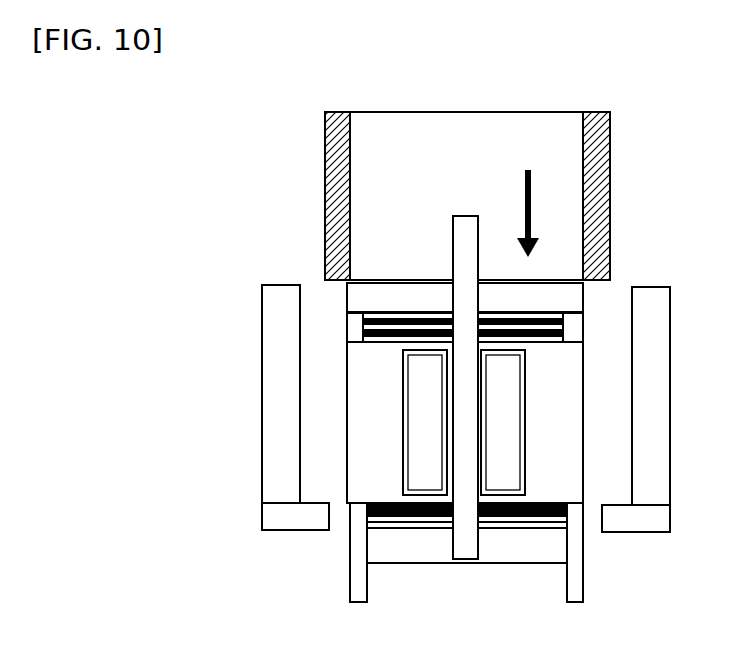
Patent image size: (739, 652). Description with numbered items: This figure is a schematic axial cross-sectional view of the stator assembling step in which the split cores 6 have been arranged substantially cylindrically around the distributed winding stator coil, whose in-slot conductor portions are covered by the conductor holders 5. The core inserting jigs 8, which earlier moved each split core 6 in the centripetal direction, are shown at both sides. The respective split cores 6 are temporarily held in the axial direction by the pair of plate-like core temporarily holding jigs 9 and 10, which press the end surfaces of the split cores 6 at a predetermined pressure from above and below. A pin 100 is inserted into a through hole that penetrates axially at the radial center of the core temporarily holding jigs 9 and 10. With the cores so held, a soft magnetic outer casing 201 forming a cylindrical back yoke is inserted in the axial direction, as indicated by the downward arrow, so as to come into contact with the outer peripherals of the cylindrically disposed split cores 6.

The soft magnetic outer casing 201 is at (335, 234).
The core temporarily holding jig 9 is at (552, 290).
The split core 6 is at (370, 418).
The conductor holder 5 is at (422, 388).
The core inserting jig 8 is at (272, 415).
The core temporarily holding jig 10 is at (528, 552).
The pin 100 is at (467, 553).